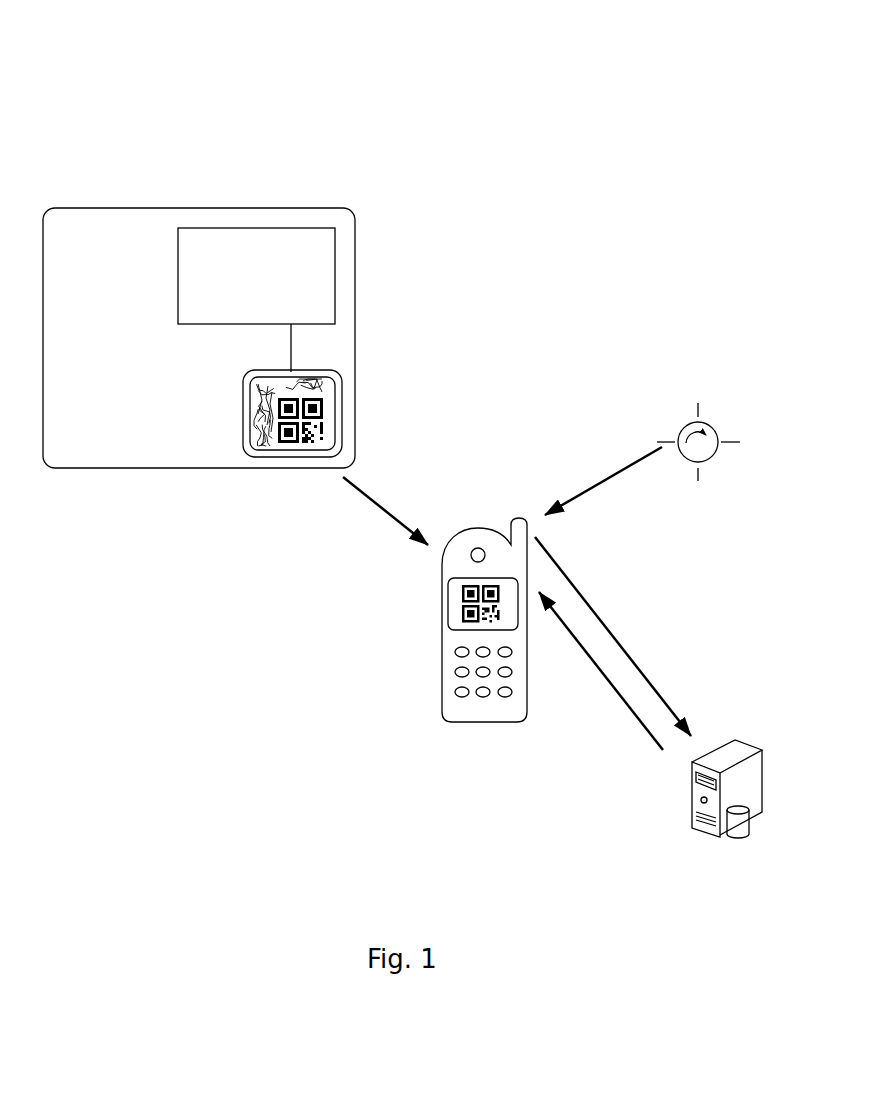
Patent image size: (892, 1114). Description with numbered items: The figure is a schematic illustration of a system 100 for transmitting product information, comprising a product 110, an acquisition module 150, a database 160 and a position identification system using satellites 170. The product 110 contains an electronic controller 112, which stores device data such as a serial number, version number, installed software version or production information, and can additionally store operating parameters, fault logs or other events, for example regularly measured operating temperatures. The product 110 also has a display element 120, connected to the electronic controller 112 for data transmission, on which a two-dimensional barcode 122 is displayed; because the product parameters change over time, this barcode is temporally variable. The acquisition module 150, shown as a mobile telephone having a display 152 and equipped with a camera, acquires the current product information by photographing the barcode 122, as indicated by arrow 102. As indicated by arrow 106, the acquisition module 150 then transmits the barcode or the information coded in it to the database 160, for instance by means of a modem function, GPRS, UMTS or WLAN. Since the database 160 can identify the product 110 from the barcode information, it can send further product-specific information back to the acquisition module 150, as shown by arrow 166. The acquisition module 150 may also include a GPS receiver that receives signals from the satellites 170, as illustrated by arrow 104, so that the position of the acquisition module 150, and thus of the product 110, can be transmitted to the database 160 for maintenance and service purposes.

The system for transmitting product information 100 is at (550, 96).
The arrow indicating barcode acquisition 102 is at (383, 505).
The arrow indicating satellite signal reception 104 is at (607, 477).
The arrow indicating transmission to database 106 is at (630, 655).
The product 110 is at (358, 348).
The electronic controller 112 is at (337, 252).
The display element 120 is at (343, 412).
The 2D barcode 122 is at (268, 445).
The acquisition module 150 is at (442, 690).
The display 152 is at (445, 613).
The database 160 is at (758, 752).
The arrow indicating transmission from database 166 is at (620, 700).
The satellites 170 is at (715, 423).